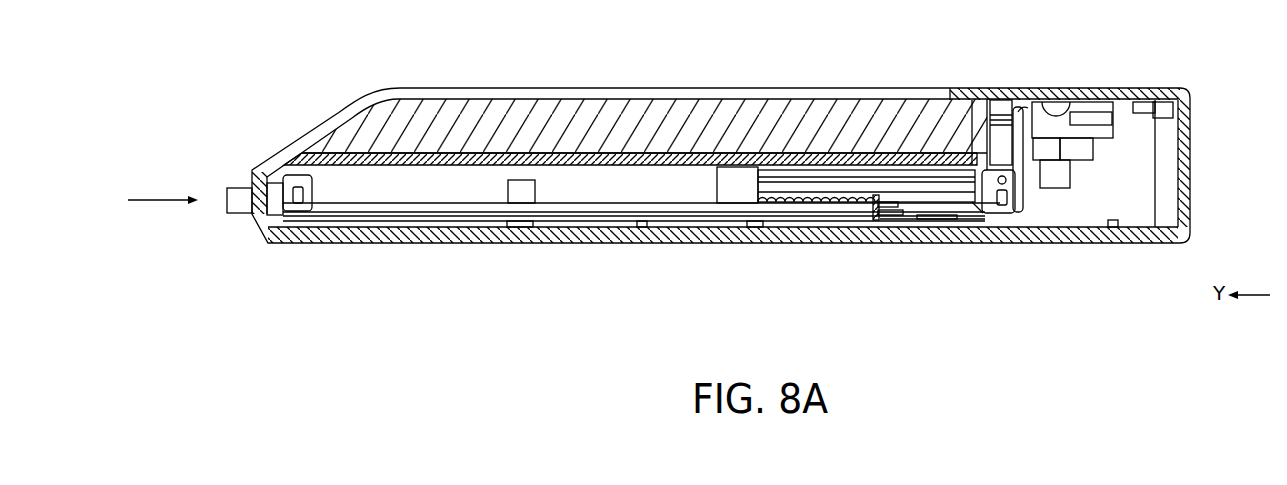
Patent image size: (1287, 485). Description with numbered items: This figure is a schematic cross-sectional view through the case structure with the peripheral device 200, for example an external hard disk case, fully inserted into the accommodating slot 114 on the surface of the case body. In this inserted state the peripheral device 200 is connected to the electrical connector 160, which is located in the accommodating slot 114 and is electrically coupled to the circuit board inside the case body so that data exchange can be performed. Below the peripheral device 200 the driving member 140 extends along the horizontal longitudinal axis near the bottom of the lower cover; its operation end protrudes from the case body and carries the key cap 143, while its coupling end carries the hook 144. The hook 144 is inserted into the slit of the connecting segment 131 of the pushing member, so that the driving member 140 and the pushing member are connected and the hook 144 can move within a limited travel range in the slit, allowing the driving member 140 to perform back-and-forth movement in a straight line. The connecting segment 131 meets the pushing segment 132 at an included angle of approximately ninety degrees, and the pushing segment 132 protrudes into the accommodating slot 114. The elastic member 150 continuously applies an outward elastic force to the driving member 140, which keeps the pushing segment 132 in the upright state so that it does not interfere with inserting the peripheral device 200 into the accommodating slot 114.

The peripheral device 200 is at (580, 86).
The accommodating slot 114 is at (305, 148).
The key cap 143 is at (238, 205).
The driving member 140 is at (580, 207).
The elastic member 150 is at (826, 200).
The connecting segment 131 is at (983, 215).
The hook 144 is at (1005, 213).
The pushing segment 132 is at (1025, 137).
The electrical connector 160 is at (1093, 132).